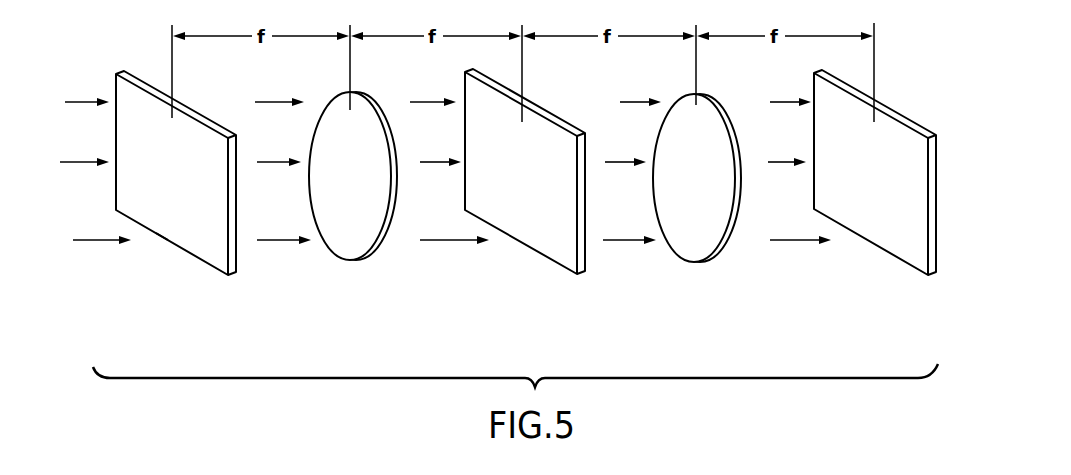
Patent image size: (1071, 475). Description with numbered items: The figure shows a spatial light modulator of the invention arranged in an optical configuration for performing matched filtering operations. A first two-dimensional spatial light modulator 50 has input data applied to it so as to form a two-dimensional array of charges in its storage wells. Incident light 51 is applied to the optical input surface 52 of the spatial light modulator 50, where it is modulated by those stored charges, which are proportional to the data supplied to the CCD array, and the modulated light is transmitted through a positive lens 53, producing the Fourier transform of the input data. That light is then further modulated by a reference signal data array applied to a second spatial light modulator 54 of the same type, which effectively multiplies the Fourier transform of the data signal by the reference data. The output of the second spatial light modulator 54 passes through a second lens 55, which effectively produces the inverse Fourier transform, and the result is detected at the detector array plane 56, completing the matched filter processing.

The spatial light modulator 50 is at (152, 210).
The incident light 51 is at (80, 88).
The optical input surface 52 is at (164, 225).
The lens 53 is at (356, 221).
The second spatial light modulator 54 is at (532, 209).
The second lens 55 is at (706, 222).
The detector array plane 56 is at (873, 210).